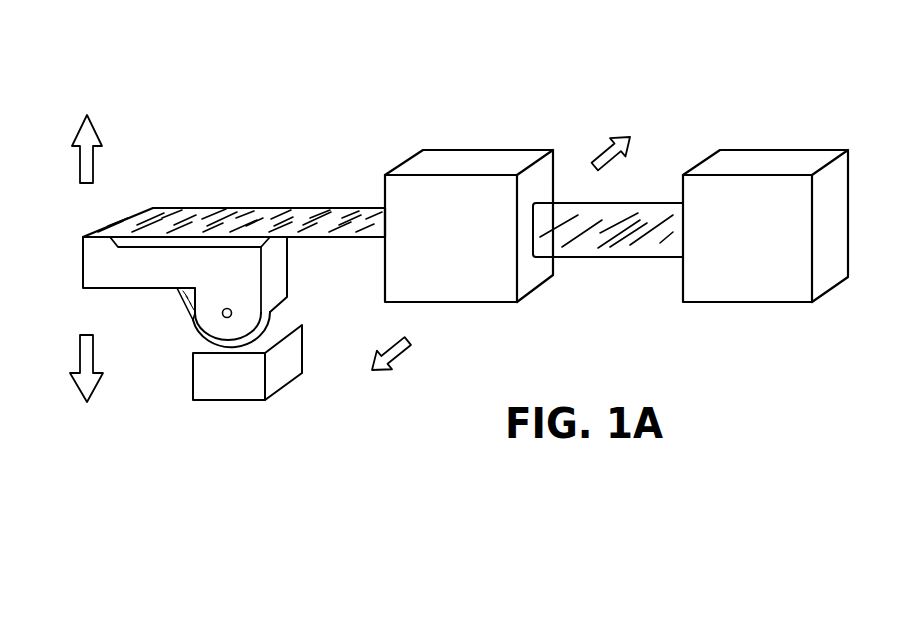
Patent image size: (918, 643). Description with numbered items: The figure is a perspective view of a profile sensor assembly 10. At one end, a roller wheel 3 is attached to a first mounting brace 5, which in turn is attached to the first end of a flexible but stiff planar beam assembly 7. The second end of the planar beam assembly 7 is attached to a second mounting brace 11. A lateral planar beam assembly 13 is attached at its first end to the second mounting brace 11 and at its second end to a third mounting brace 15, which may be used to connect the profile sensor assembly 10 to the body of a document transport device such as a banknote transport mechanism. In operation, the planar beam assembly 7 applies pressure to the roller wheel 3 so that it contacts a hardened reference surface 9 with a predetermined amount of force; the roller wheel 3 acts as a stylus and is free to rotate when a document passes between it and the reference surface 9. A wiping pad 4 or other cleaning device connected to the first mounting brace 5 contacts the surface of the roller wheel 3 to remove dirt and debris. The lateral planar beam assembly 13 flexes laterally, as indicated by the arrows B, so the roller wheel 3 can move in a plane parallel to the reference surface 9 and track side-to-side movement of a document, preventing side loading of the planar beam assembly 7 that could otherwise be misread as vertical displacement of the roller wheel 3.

The roller wheel 3 is at (203, 335).
The wiping pad 4 is at (183, 300).
The first mounting brace 5 is at (92, 255).
The planar beam assembly 7 is at (258, 218).
The reference surface 9 is at (277, 377).
The profile sensor assembly 10 is at (558, 62).
The second mounting brace 11 is at (468, 162).
The lateral planar beam assembly 13 is at (613, 252).
The third mounting brace 15 is at (765, 160).